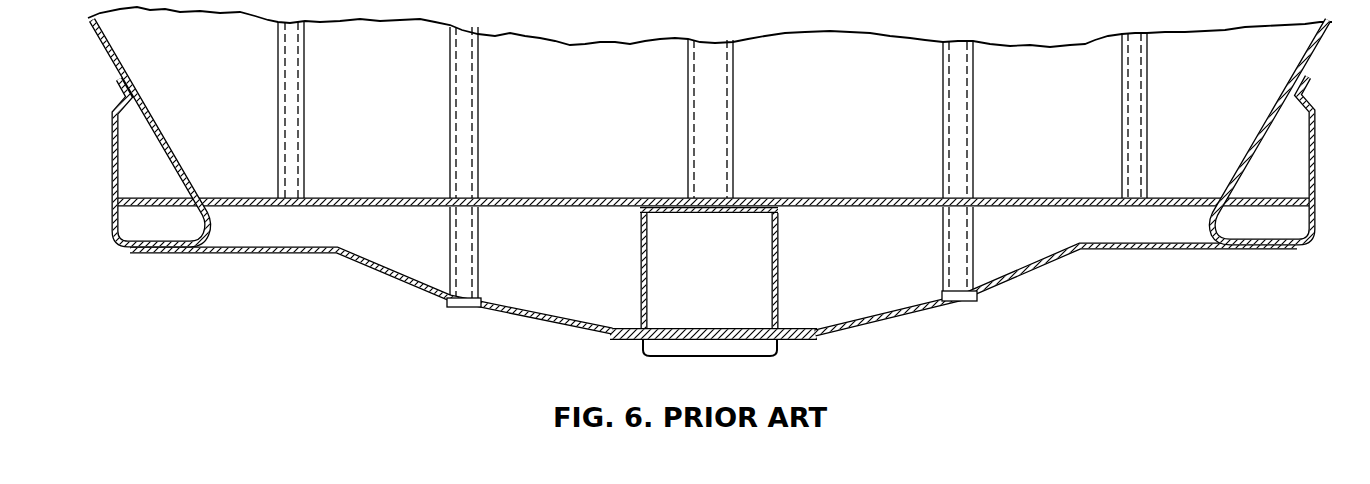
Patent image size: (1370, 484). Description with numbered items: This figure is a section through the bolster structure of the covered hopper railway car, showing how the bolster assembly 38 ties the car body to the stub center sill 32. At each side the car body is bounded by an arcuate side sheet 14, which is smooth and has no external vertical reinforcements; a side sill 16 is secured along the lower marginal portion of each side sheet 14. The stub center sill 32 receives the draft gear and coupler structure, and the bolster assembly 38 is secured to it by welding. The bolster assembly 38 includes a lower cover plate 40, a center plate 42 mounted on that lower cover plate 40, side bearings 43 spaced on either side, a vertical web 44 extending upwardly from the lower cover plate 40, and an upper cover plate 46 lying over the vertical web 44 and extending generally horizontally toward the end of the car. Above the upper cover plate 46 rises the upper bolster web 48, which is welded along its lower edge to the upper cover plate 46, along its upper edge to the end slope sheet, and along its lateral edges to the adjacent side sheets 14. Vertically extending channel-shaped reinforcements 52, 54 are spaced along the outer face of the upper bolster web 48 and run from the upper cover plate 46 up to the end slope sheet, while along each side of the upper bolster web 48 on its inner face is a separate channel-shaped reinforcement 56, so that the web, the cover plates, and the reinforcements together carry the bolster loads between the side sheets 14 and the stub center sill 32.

The side sheet 14 is at (116, 60).
The side sill 16 is at (111, 182).
The stub center sill 32 is at (779, 270).
The bolster assembly 38 is at (506, 321).
The lower cover plate 40 is at (878, 322).
The center plate 42 is at (778, 353).
The side bearing 43 is at (447, 310).
The vertical web 44 is at (581, 270).
The upper cover plate 46 is at (588, 197).
The upper bolster web 48 is at (868, 108).
The channel-shaped reinforcement 52 is at (736, 118).
The channel-shaped reinforcement 54 is at (478, 120).
The channel-shaped reinforcement 56 is at (305, 133).